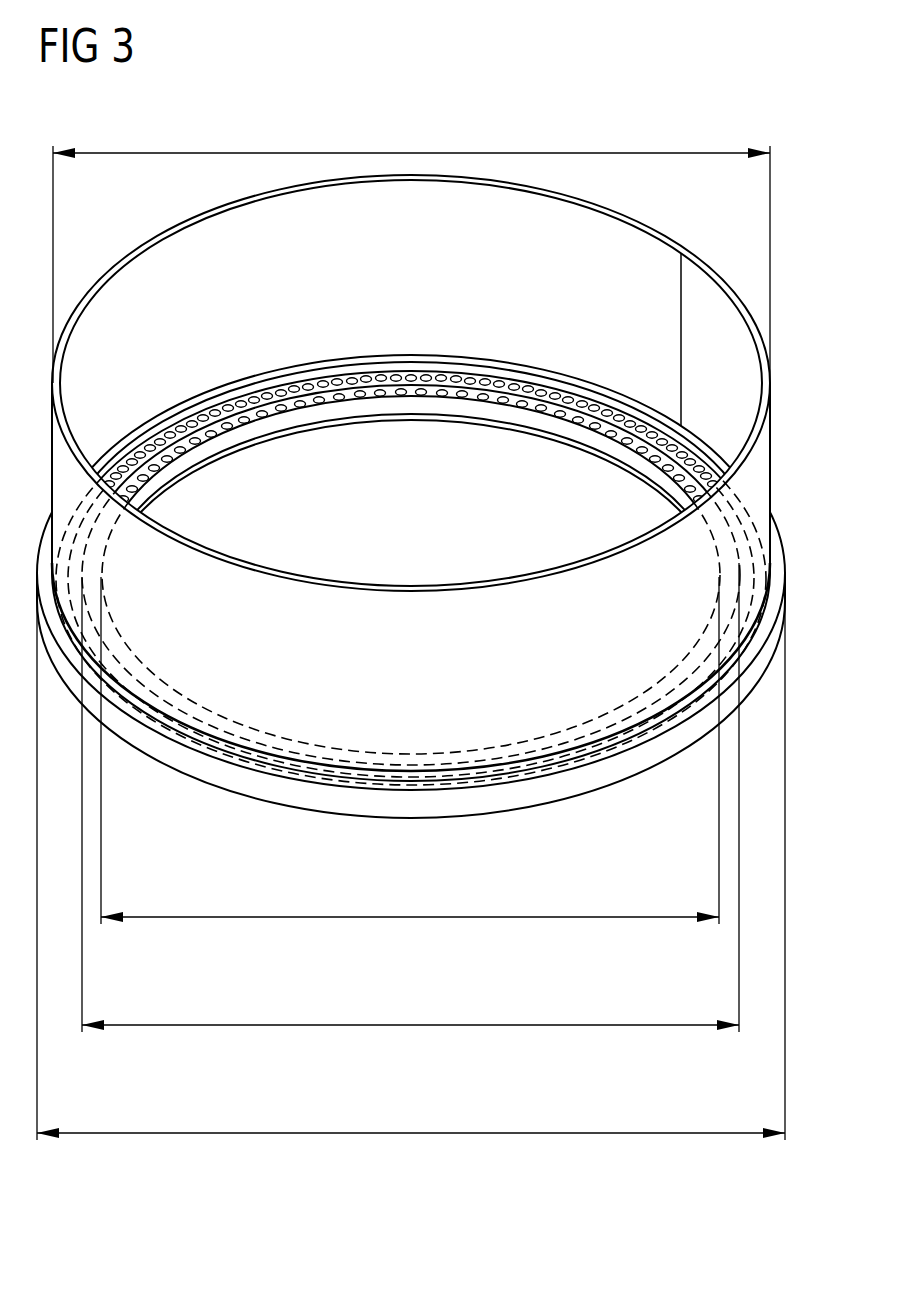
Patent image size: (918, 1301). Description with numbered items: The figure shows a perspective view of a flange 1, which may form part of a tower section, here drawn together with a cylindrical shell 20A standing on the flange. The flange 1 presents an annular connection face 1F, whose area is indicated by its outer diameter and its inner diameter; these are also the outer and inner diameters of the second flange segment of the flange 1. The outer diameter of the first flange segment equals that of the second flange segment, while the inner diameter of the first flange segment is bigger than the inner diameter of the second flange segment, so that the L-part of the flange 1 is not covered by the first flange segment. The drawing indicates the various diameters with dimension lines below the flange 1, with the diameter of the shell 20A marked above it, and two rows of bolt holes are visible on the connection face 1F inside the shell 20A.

The flange 1 is at (652, 757).
The annular connection face 1F is at (597, 790).
The cylindrical shell / tower segment 20A is at (662, 239).